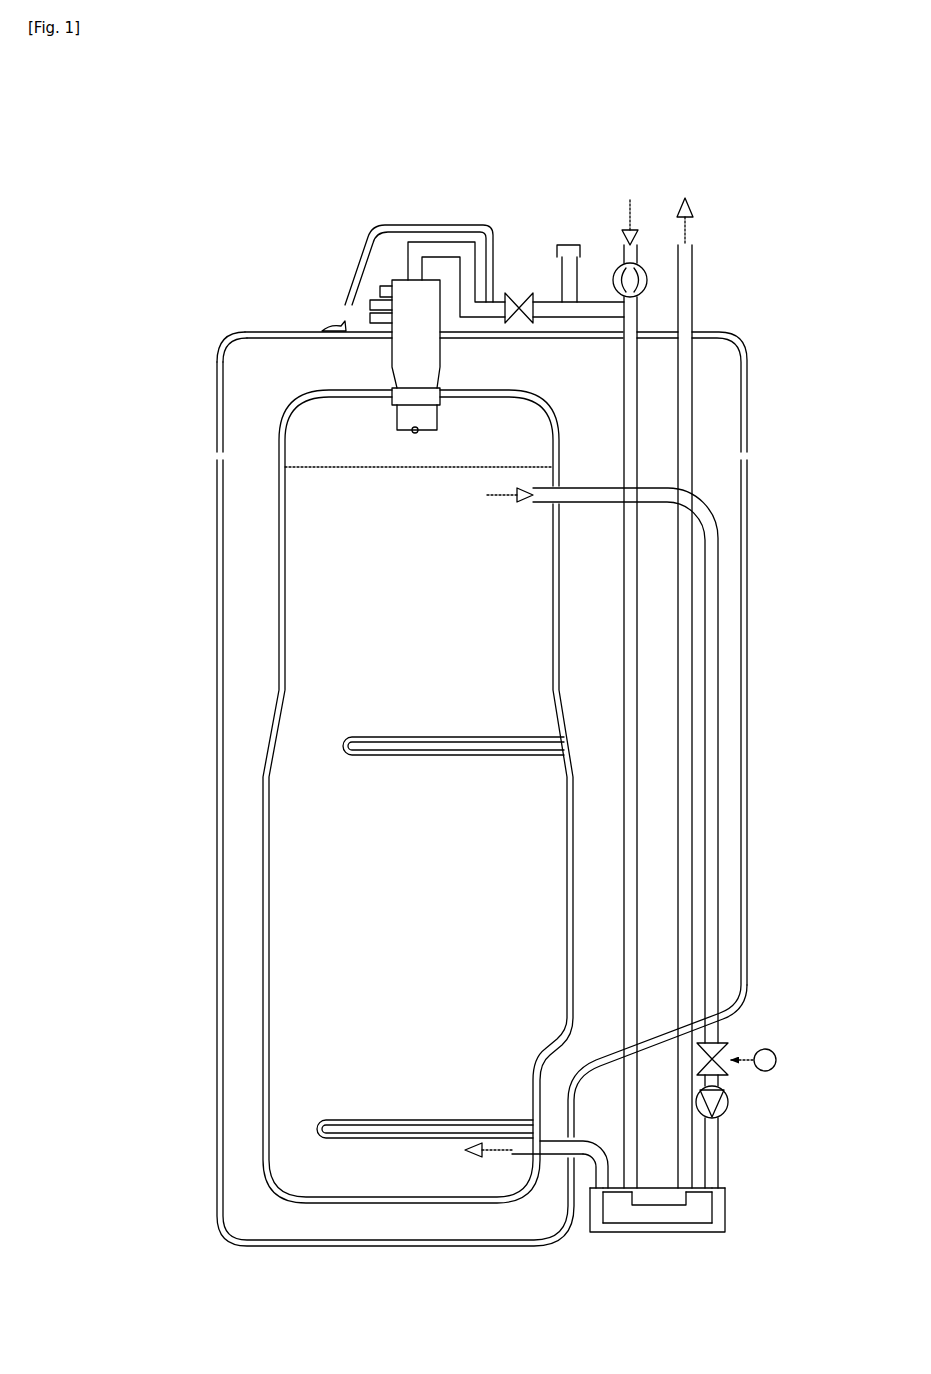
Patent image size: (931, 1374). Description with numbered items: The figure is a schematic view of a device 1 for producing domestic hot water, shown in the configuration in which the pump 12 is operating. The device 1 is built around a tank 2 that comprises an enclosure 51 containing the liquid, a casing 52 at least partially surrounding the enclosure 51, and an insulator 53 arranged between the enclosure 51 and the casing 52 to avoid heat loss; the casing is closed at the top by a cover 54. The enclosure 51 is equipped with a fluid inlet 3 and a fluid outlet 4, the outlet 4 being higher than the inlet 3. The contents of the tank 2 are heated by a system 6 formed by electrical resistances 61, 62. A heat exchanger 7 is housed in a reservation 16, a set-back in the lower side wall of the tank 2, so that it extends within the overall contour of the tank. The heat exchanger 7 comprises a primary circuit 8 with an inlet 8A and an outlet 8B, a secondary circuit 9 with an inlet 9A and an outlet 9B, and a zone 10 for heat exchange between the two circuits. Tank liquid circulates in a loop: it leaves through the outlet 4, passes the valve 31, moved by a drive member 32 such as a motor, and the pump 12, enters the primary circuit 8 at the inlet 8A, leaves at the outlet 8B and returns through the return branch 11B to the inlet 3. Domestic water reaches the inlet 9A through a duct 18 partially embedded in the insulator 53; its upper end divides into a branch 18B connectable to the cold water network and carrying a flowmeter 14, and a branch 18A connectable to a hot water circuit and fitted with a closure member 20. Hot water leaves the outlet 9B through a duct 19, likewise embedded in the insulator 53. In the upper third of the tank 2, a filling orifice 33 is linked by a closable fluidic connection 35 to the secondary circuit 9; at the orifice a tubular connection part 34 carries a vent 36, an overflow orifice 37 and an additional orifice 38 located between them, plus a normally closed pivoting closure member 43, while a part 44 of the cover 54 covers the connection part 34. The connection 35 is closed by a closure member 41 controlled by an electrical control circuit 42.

The device for producing hot water 1 is at (247, 322).
The tank 2 is at (127, 515).
The fluid inlet 3 is at (533, 1156).
The fluid outlet 4 is at (555, 504).
The system for heating the contents of the tank 6 is at (345, 755).
The heat exchanger 7 is at (727, 1221).
The primary circuit 8 is at (679, 1224).
The fluid inlet of the primary circuit 8A is at (721, 1189).
The fluid outlet of the primary circuit 8B is at (604, 1191).
The secondary circuit 9 is at (681, 1208).
The fluid inlet of the secondary circuit 9A is at (632, 1191).
The fluid outlet of the secondary circuit 9B is at (686, 1191).
The zone for heat exchange 10 is at (655, 1218).
The return branch 11B is at (560, 1156).
The pump 12 is at (727, 1114).
The flowmeter 14 is at (644, 270).
The reservation 16 is at (600, 1108).
The duct 18 is at (638, 448).
The branch of the duct 18A is at (577, 273).
The branch of the duct 18B is at (638, 245).
The duct 19 is at (693, 463).
The closure member 20 is at (558, 247).
The valve 31 is at (728, 1044).
The drive member 32 is at (762, 1071).
The filling orifice 33 is at (392, 388).
The connection part 34 is at (407, 278).
The closable fluidic connection 35 is at (452, 243).
The vent 36 is at (381, 284).
The overflow orifice 37 is at (367, 320).
The additional orifice 38 is at (374, 302).
The closure member 41 is at (505, 292).
The electrical control circuit 42 is at (534, 298).
The closure member 43 is at (405, 430).
The part of the cover 44 is at (360, 247).
The enclosure 51 is at (283, 608).
The casing 52 is at (218, 598).
The insulator 53 is at (240, 533).
The cover 54 is at (223, 353).
The electrical resistance 61 is at (345, 742).
The electrical resistance 62 is at (318, 1127).